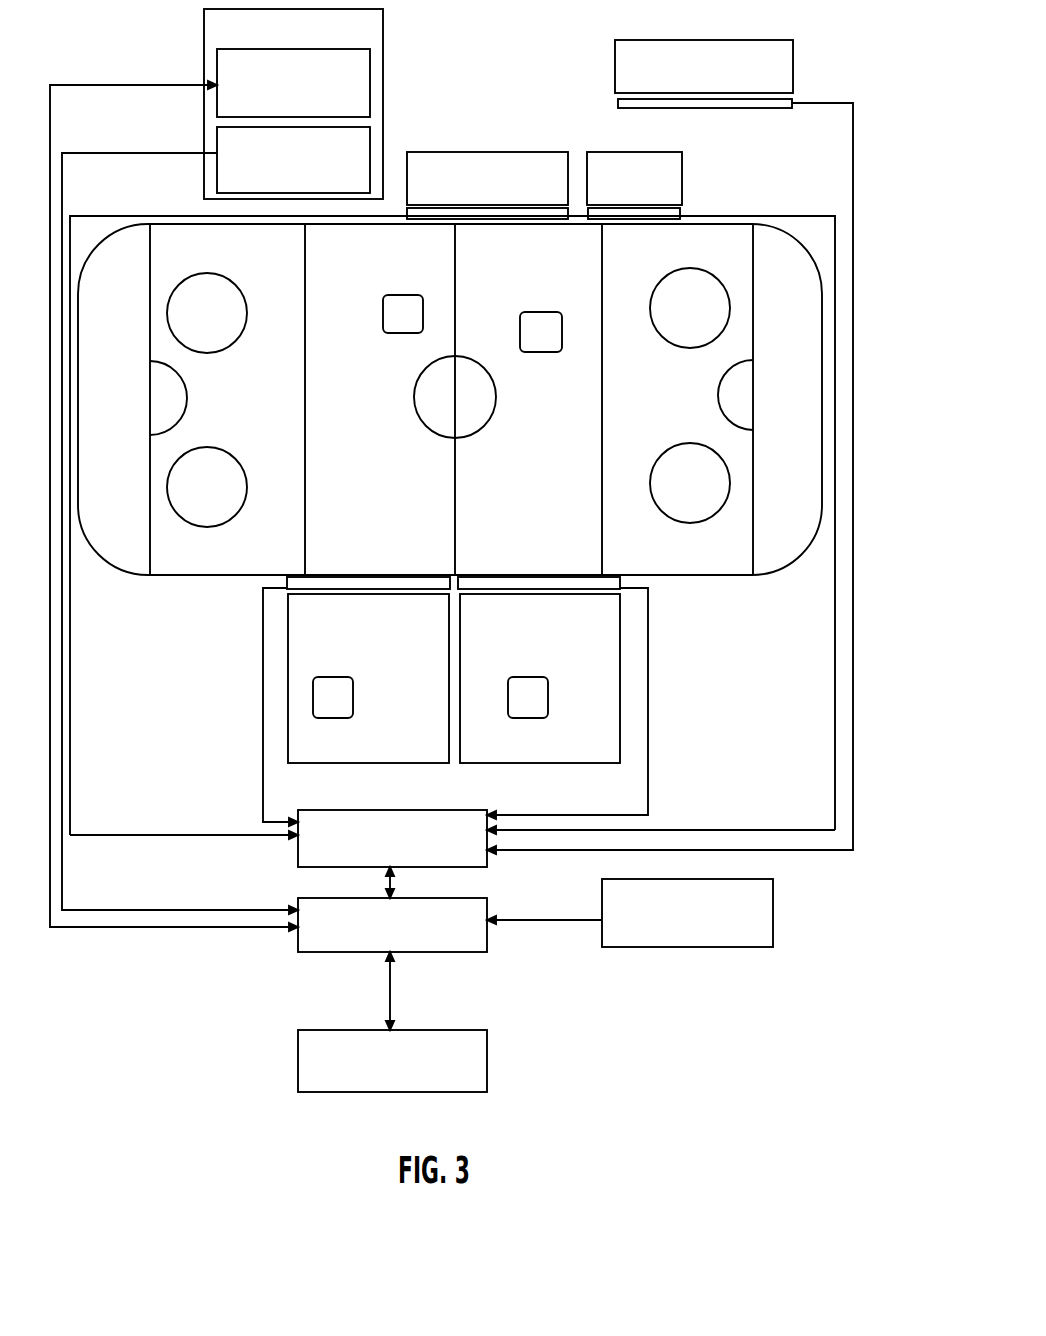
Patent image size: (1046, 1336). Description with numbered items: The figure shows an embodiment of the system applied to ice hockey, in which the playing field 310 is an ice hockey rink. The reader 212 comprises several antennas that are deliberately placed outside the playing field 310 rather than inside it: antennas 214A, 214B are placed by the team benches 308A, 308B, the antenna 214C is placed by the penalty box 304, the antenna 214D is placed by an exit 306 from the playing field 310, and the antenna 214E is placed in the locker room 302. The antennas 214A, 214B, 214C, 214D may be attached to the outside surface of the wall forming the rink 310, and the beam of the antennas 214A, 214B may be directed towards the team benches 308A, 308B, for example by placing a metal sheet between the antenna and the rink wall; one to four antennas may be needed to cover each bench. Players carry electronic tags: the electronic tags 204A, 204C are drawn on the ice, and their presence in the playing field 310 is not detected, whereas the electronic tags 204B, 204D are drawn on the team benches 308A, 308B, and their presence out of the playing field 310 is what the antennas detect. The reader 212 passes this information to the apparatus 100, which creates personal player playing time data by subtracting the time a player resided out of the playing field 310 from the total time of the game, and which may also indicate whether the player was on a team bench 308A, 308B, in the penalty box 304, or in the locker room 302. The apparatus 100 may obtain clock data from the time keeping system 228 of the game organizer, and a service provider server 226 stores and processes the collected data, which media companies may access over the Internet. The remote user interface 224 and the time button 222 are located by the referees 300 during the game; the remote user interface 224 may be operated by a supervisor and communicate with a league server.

The referees 300 is at (372, 45).
The remote user interface 224 is at (365, 81).
The time button 222 is at (340, 155).
The locker room 302 is at (777, 80).
The antenna 214E is at (672, 108).
The penalty box 304 is at (558, 188).
The exit 306 is at (668, 188).
The antenna 214C is at (462, 224).
The antenna 214D is at (640, 224).
The playing field 310 is at (702, 575).
The electronic tag 204A is at (391, 295).
The electronic tag 204C is at (528, 312).
The antenna 214A is at (362, 577).
The antenna 214B is at (532, 577).
The team bench 308A is at (441, 633).
The team bench 308B is at (612, 633).
The electronic tag 204B is at (319, 677).
The electronic tag 204D is at (514, 677).
The reader 212 is at (450, 848).
The apparatus 100 is at (468, 931).
The time keeping system 228 is at (763, 911).
The server 226 is at (447, 1070).